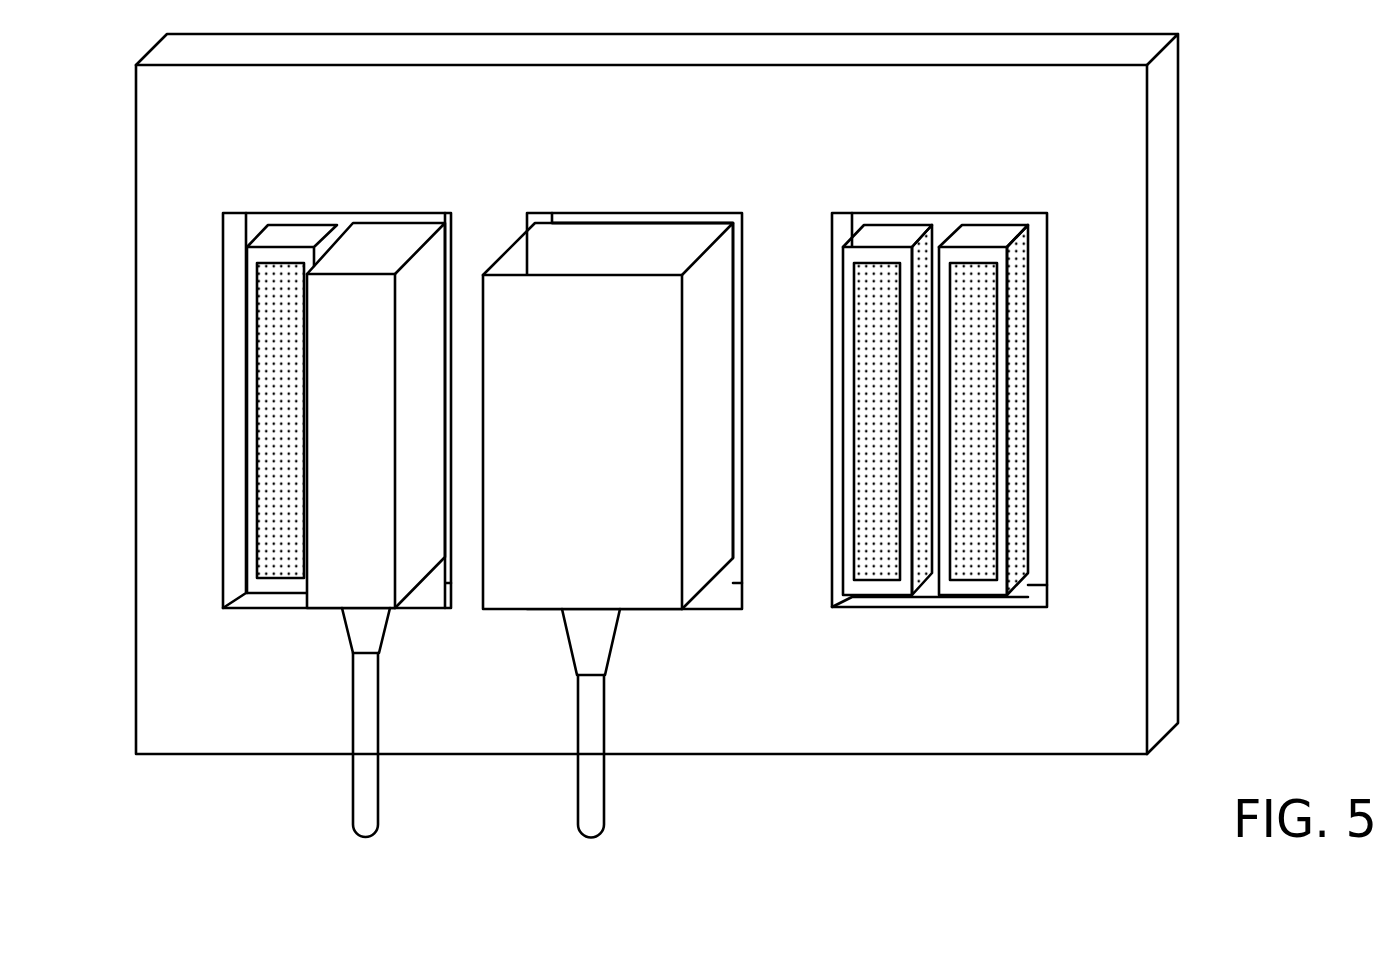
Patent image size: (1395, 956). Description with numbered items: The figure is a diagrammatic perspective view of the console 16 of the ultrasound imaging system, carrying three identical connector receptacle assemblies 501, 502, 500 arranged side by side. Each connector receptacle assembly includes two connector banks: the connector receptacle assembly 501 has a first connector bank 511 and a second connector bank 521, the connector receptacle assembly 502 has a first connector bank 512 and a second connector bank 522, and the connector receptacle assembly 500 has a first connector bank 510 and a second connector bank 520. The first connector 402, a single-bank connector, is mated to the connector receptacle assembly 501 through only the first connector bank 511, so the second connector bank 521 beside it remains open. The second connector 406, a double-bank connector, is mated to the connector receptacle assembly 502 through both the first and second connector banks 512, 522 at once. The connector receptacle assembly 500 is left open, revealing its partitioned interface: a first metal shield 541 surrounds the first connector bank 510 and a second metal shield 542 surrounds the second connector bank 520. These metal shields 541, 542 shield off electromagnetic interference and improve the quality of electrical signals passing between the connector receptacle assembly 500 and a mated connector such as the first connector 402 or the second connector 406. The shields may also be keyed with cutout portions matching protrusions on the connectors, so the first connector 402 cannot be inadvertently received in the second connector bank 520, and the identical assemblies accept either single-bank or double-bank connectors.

The console 16 is at (137, 126).
The first connector 402 is at (418, 213).
The second connector 406 is at (702, 213).
The connector receptacle assembly 500 is at (937, 213).
The connector receptacle assembly 501 is at (338, 213).
The connector receptacle assembly 502 is at (636, 213).
The first connector bank 510 is at (975, 607).
The second connector bank 520 is at (877, 607).
The first connector bank 511 is at (397, 608).
The first connector bank 512 is at (635, 609).
The second connector bank 521 is at (315, 608).
The second connector bank 522 is at (530, 609).
The first metal shield 541 is at (1027, 328).
The second metal shield 542 is at (923, 532).